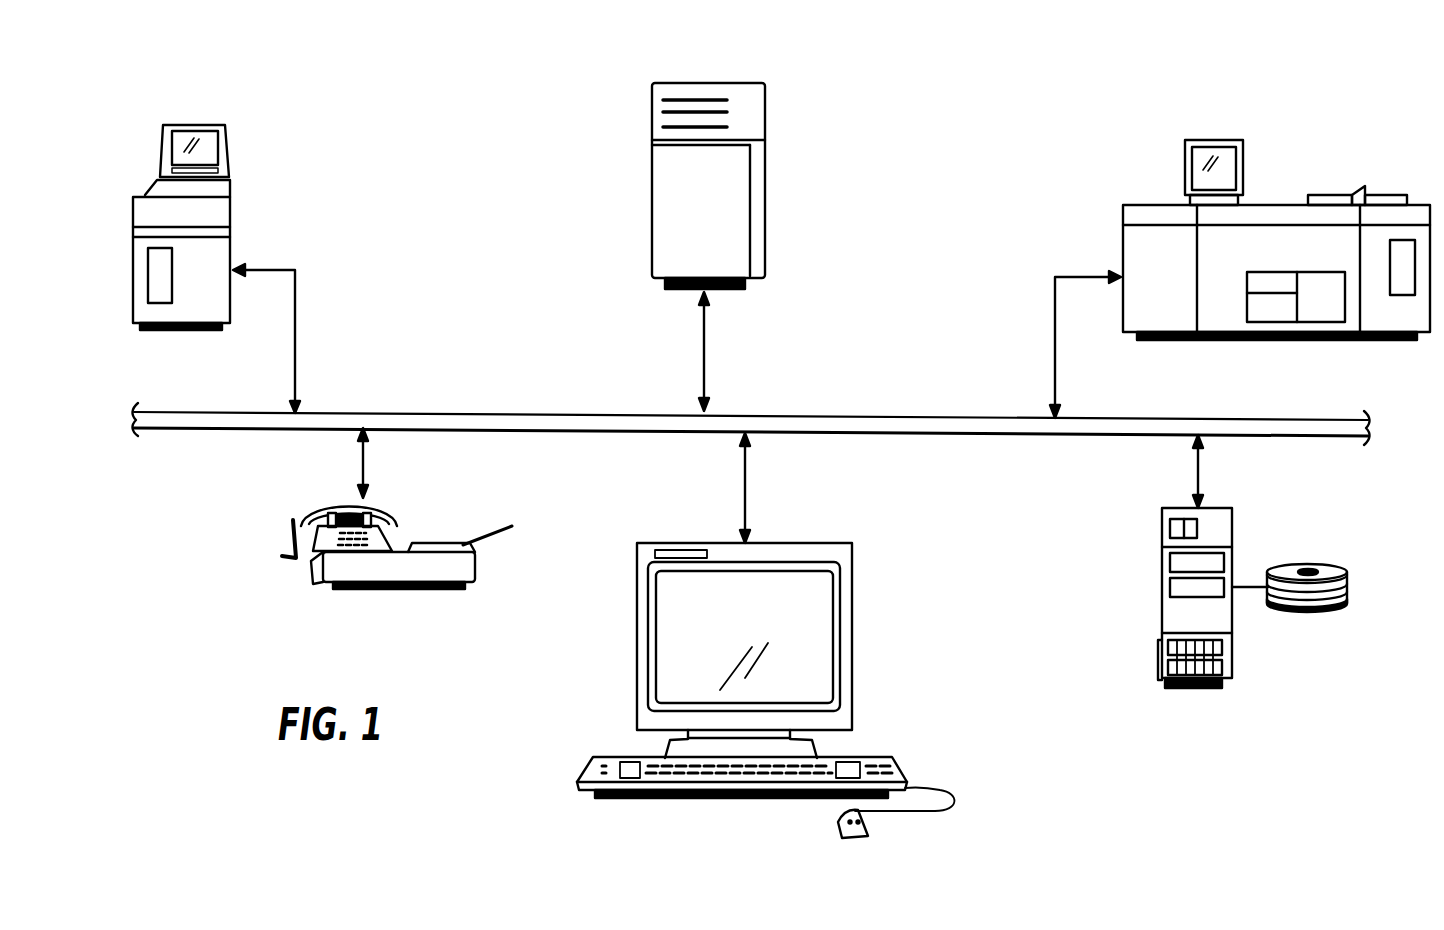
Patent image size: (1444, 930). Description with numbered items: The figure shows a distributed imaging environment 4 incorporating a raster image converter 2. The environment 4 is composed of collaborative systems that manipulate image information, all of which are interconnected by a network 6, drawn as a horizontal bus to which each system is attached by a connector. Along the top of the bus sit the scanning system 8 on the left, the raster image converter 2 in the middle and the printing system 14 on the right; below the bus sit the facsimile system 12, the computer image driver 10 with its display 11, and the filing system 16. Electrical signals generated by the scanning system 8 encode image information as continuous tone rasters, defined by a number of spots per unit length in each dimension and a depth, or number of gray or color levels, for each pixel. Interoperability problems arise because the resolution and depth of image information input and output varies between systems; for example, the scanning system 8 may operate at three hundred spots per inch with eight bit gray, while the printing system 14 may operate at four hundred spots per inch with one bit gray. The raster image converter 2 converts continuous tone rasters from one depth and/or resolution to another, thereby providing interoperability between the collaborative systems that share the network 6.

The distributed imaging environment 4 is at (404, 71).
The raster image converter 2 is at (710, 83).
The network 6 is at (902, 417).
The scanning system 8 is at (233, 252).
The computer image driver 10 is at (765, 666).
The display 11 is at (797, 612).
The facsimile system 12 is at (435, 588).
The printing system 14 is at (1278, 205).
The filing system 16 is at (1235, 508).